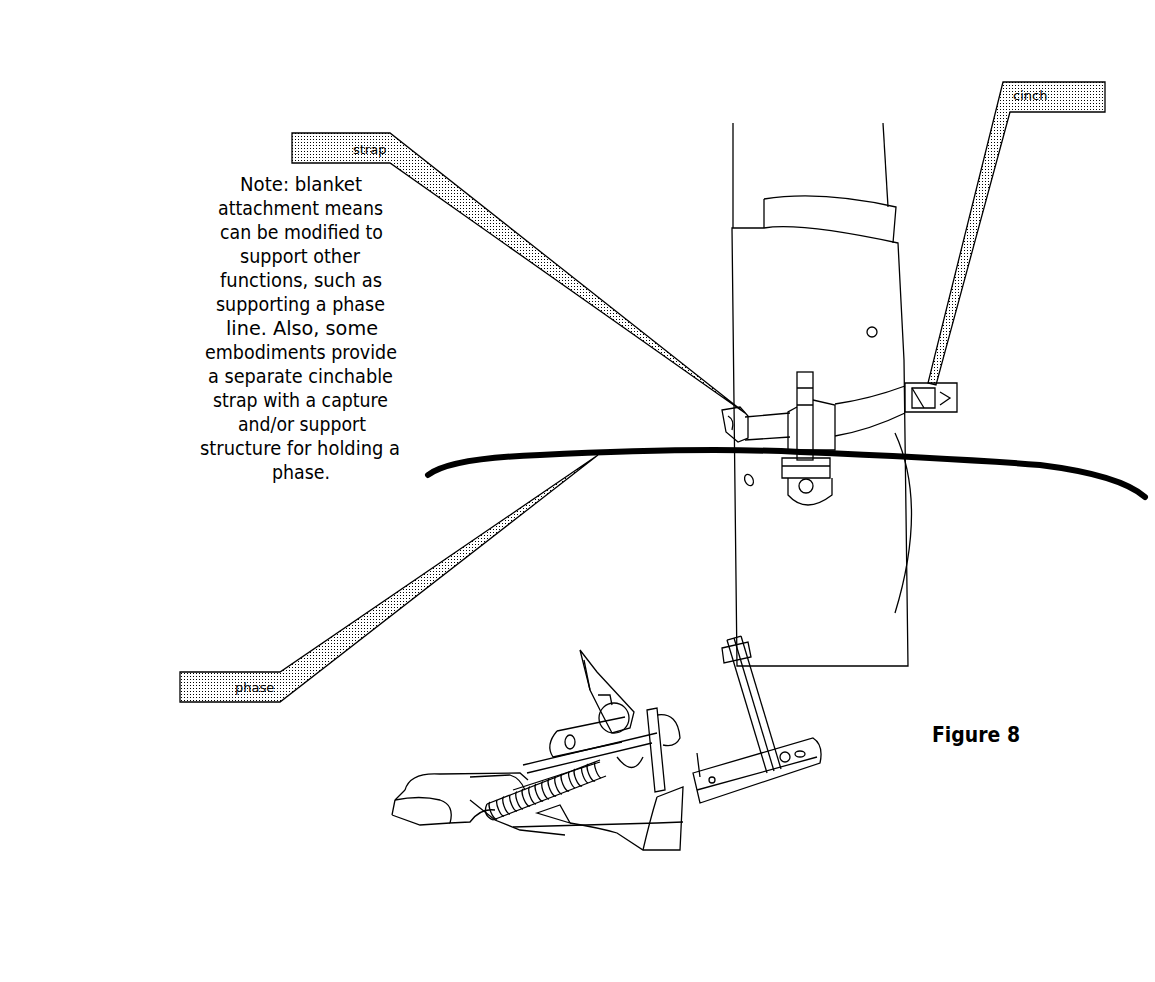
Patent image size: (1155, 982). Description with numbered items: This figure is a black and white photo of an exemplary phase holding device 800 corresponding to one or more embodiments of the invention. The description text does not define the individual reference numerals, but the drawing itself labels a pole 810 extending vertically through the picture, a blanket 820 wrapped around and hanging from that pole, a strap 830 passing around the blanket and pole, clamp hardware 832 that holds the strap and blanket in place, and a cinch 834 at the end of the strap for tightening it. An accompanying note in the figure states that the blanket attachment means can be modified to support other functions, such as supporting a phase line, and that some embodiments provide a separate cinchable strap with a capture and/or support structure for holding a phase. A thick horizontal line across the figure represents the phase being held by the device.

The blanket attachment assembly 800 is at (510, 83).
The pole 810 is at (760, 172).
The blanket 820 is at (752, 283).
The strap 830 is at (716, 411).
The clamp 832 is at (792, 376).
The cinch 834 is at (945, 383).